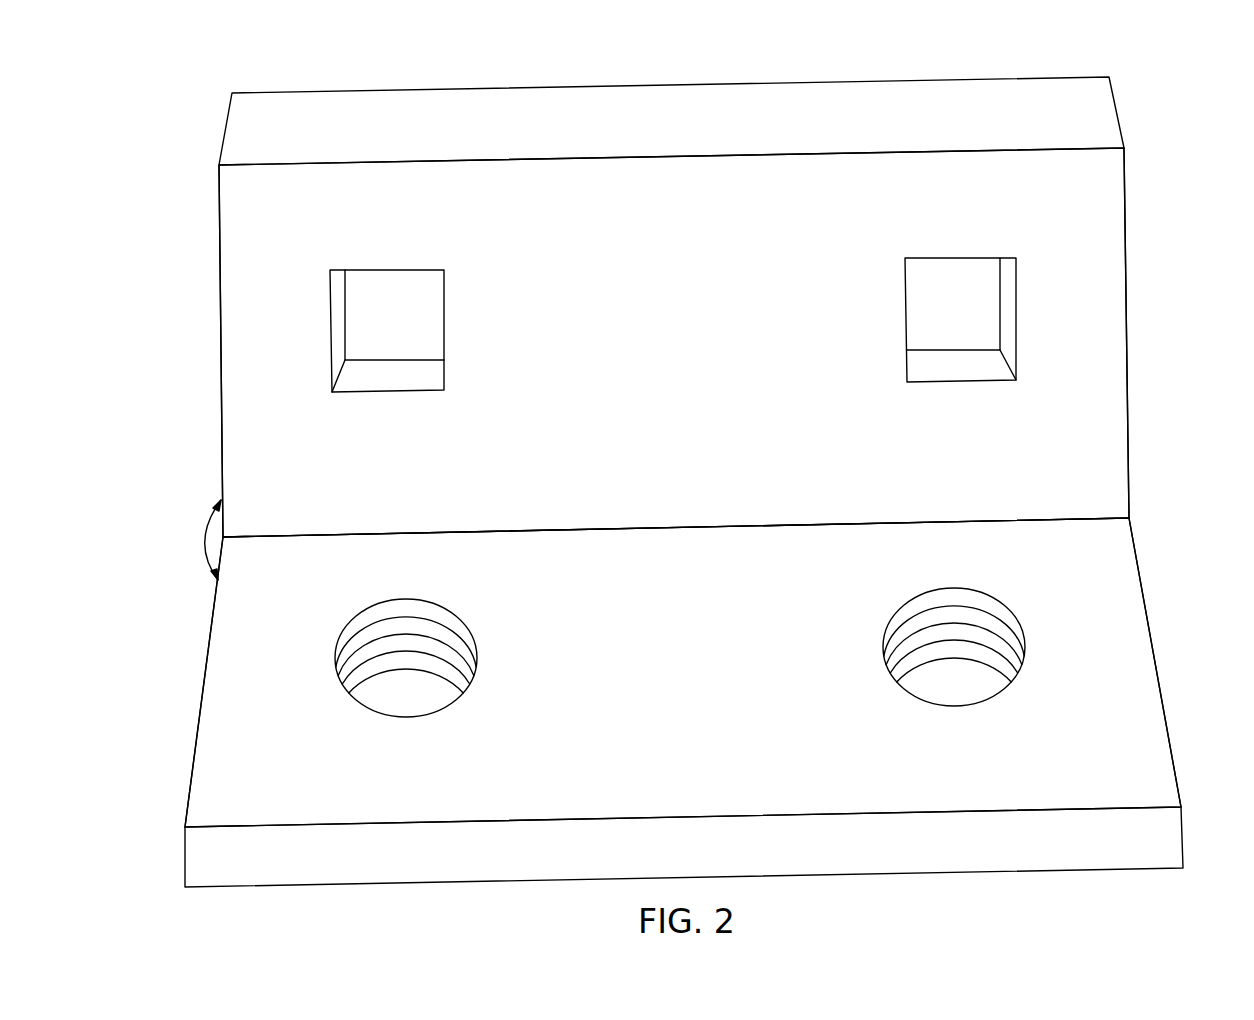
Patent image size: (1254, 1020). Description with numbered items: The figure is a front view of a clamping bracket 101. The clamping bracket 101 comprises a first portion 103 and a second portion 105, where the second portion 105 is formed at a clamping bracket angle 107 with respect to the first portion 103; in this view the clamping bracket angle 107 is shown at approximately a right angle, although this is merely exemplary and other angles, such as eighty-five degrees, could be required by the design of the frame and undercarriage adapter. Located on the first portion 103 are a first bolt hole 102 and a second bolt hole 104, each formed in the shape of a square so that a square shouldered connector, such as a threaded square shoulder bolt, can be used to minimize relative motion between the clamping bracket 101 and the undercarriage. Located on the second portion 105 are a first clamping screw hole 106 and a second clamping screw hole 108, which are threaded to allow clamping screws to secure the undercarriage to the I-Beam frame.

The clamping bracket 101 is at (1077, 76).
The first bolt hole 102 is at (350, 319).
The first portion 103 is at (1102, 220).
The second bolt hole 104 is at (992, 300).
The second portion 105 is at (1113, 588).
The first clamping screw hole 106 is at (350, 666).
The bend angle 107 is at (200, 542).
The second clamping screw hole 108 is at (1005, 650).